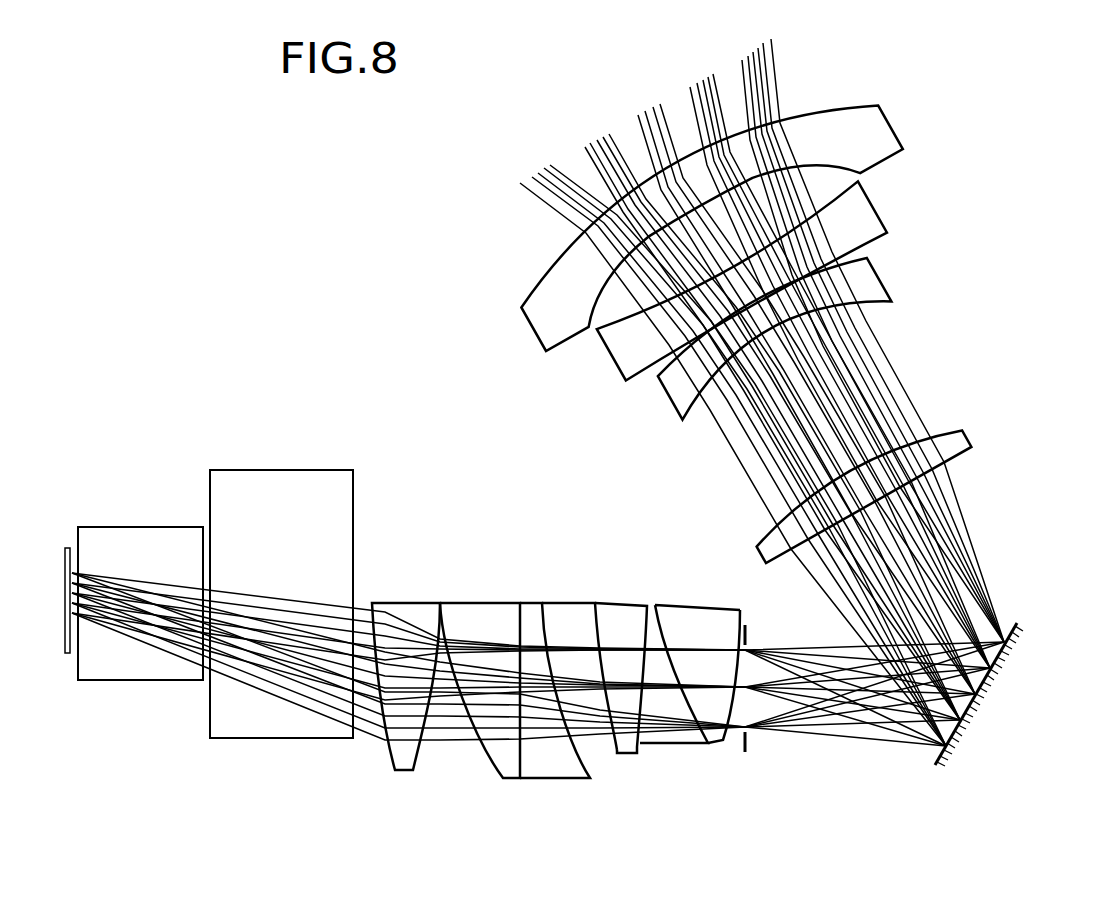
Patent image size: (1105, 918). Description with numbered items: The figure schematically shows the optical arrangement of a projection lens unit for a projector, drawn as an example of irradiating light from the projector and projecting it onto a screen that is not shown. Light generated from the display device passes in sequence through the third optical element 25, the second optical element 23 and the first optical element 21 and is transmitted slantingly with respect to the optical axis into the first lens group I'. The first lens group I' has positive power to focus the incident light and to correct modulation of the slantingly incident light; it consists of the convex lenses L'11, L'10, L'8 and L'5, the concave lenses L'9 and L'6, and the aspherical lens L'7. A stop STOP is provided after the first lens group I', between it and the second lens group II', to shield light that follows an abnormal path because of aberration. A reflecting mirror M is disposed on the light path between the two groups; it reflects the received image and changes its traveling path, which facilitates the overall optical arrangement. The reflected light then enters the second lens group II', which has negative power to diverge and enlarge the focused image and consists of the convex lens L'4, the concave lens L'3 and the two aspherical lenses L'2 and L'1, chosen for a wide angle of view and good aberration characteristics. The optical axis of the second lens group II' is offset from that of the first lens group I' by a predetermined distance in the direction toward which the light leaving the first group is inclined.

The third optical element 25 is at (66, 650).
The second optical element 23 is at (125, 683).
The first optical element 21 is at (240, 740).
The convex lens L'11 is at (422, 715).
The convex lens L'10 is at (481, 715).
The concave lens L'9 is at (555, 715).
The convex lens L'8 is at (588, 715).
The aspherical lens L'7 is at (638, 715).
The concave lens L'6 is at (690, 716).
The convex lens L'5 is at (741, 719).
The stop STOP is at (749, 748).
The reflecting mirror M is at (1017, 623).
The convex lens L'4 is at (897, 456).
The concave lens L'3 is at (820, 330).
The aspherical lens L'2 is at (786, 280).
The aspherical lens L'1 is at (722, 206).
The first lens group I' is at (605, 851).
The second lens group II' is at (997, 254).